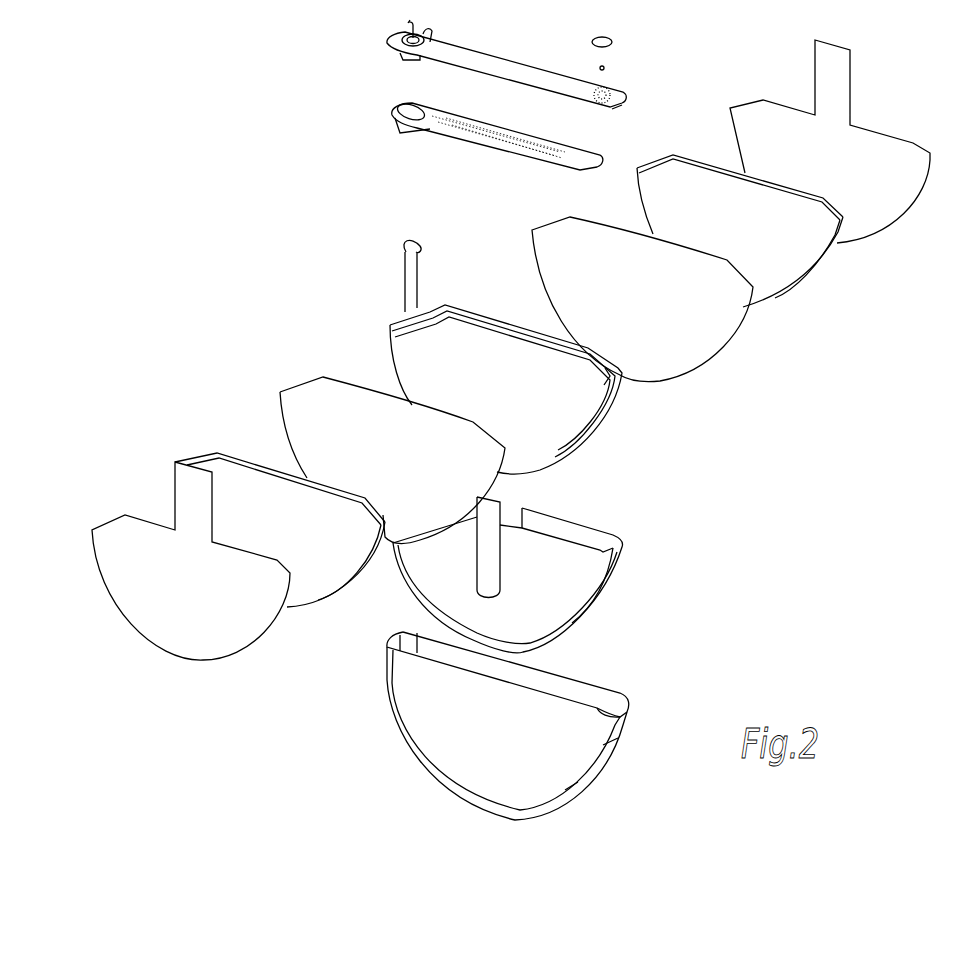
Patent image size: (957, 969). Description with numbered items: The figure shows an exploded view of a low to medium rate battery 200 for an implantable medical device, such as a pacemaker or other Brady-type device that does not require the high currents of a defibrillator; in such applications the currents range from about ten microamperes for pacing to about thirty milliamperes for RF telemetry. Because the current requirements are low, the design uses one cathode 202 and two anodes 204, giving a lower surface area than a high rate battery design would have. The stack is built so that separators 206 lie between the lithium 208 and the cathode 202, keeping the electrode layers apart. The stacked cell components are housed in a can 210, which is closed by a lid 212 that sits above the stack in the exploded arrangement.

The low to medium rate battery 200 is at (121, 161).
The cathode 202 is at (573, 443).
The anodes 204 is at (887, 217).
The separators 206 is at (557, 224).
The lithium 208 is at (788, 292).
The can 210 is at (587, 782).
The lid 212 is at (513, 62).